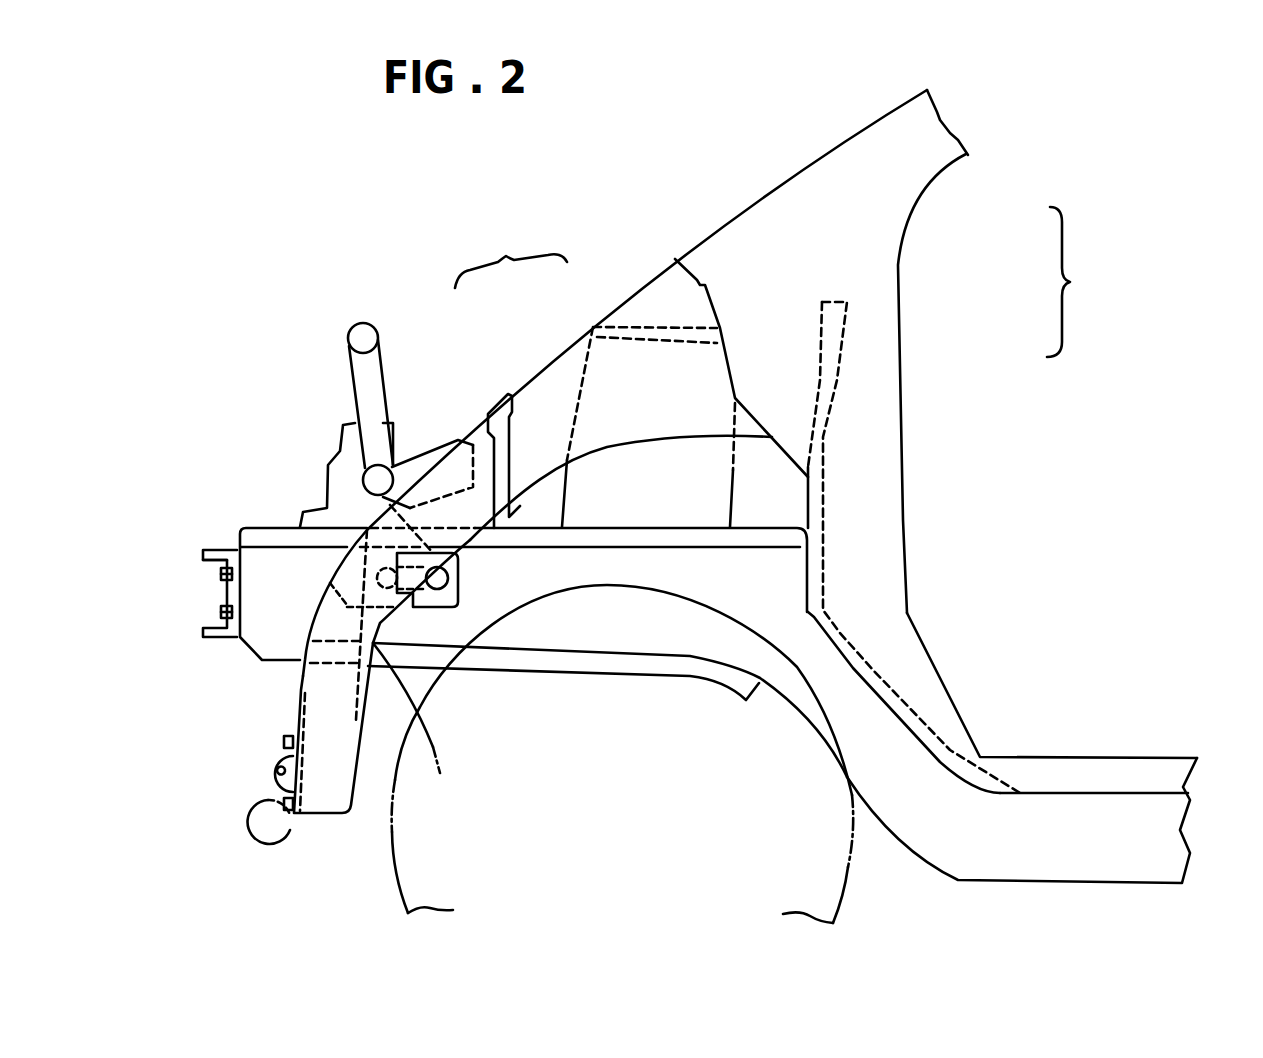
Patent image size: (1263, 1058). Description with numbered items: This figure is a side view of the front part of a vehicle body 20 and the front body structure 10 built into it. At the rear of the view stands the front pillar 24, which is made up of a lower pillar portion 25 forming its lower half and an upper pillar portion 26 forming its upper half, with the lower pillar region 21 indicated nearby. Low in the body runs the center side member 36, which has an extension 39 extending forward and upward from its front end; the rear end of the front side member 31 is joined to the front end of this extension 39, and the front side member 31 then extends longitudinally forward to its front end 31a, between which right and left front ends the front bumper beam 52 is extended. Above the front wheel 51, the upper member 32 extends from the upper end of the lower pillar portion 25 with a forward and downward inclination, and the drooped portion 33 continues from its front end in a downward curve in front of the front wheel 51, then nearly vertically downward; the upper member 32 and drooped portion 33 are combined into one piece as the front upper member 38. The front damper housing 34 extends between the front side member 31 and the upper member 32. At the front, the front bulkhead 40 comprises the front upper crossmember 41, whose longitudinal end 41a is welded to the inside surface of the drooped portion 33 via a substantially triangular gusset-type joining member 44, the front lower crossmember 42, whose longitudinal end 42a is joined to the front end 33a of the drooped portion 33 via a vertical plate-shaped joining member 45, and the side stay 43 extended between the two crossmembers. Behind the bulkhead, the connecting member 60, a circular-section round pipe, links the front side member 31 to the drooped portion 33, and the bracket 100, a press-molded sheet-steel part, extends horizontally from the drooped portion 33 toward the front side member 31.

The vehicle body front structure 10 is at (1175, 252).
The body 20 is at (830, 152).
The front pillar lower panel 21 is at (835, 405).
The front pillar 24 is at (1081, 282).
The lower pillar portion 25 is at (890, 373).
The upper pillar portion 26 is at (917, 177).
The front side member 31 is at (605, 635).
The front end of front side member 31a is at (238, 587).
The upper member 32 is at (560, 362).
The drooped portion 33 is at (490, 415).
The front end of drooped portion 33a is at (295, 677).
The front damper housing 34 is at (665, 327).
The center side member 36 is at (1063, 810).
The front upper member 38 is at (511, 255).
The extension 39 is at (902, 747).
The front bulkhead 40 is at (342, 380).
The front upper crossmember 41 is at (357, 333).
The longitudinal end of front upper crossmember 41a is at (368, 470).
The front lower crossmember 42 is at (263, 832).
The longitudinal end of front lower crossmember 42a is at (283, 775).
The side stay 43 is at (332, 505).
The joining member 44 is at (418, 462).
The joining member 45 is at (280, 760).
The front wheel 51 is at (845, 893).
The front bumper beam 52 is at (215, 554).
The connecting member 60 is at (439, 590).
The bracket 100 is at (427, 727).